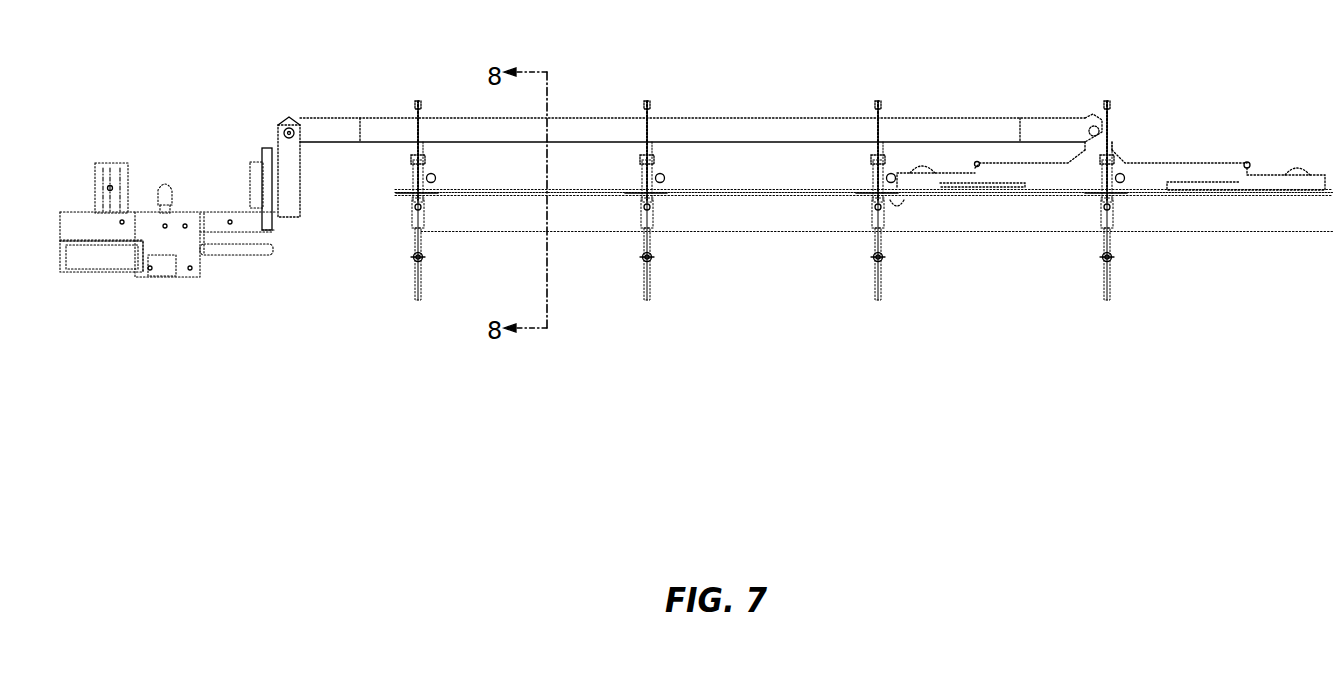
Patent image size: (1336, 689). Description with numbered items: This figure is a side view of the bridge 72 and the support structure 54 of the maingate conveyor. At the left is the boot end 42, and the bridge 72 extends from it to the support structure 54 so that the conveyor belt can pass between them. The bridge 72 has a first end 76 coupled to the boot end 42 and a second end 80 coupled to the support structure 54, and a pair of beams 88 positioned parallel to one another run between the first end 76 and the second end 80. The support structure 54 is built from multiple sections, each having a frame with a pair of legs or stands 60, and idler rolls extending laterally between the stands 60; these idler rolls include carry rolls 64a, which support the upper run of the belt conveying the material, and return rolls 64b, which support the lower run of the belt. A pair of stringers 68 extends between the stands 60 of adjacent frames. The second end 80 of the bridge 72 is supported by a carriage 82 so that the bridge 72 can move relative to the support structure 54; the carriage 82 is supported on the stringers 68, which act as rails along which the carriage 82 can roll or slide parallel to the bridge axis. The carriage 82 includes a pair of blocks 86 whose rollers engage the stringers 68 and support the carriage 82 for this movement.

The boot end 42 is at (161, 304).
The support structure 54 is at (1313, 251).
The stands 60 is at (419, 303).
The carry rolls 64a is at (410, 218).
The return rolls 64b is at (426, 260).
The stringers 68 is at (797, 197).
The bridge 72 is at (595, 97).
The first end 76 is at (284, 97).
The second end 80 is at (1092, 97).
The carriage 82 is at (1162, 101).
The blocks 86 is at (1215, 168).
The beams 88 is at (762, 130).